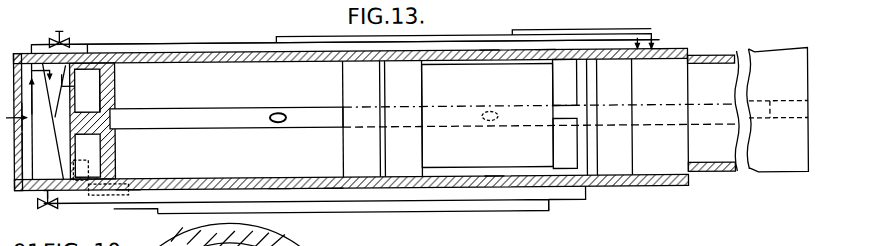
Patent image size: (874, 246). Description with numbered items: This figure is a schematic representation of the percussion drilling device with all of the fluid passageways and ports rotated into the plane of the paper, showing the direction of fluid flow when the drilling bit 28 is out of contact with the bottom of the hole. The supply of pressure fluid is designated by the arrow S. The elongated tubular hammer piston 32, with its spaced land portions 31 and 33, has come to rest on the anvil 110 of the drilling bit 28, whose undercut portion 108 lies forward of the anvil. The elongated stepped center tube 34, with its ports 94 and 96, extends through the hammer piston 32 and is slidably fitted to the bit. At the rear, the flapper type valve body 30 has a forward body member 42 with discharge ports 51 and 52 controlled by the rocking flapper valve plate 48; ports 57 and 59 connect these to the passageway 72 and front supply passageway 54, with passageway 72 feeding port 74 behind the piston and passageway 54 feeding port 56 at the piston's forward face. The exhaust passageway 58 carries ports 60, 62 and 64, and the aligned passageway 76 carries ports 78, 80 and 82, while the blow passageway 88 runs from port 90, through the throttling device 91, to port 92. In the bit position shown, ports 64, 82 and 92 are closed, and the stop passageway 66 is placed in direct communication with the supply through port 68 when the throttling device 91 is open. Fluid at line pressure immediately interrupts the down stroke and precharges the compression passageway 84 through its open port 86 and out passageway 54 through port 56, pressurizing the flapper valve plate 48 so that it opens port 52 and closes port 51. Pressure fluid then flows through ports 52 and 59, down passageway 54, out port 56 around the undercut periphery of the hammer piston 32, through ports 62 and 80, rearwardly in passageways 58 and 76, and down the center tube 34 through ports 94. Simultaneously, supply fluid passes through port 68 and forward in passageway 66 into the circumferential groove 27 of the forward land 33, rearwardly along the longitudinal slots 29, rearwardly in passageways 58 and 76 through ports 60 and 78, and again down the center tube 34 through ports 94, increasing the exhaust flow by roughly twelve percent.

The circumferential groove 27 is at (578, 93).
The drilling bit 28 is at (787, 75).
The longitudinal slots 29 is at (565, 117).
The valve body 30 is at (75, 61).
The land portion 31 is at (357, 83).
The hammer piston 32 is at (425, 85).
The forward land 33 is at (557, 76).
The center tube 34 is at (217, 115).
The forward body member 42 is at (41, 152).
The flapper valve plate 48 is at (72, 161).
The discharge port 51 is at (98, 152).
The discharge port 52 is at (78, 95).
The front supply passageway 54 is at (214, 41).
The port 56 is at (546, 52).
The port 57 is at (77, 202).
The exhaust passageway 58 is at (470, 36).
The port 59 is at (96, 70).
The port 60 is at (277, 52).
The intermediate port 62 is at (490, 52).
The forwardmost port 64 is at (638, 48).
The stop passageway 66 is at (88, 48).
The port 68 is at (34, 195).
The passageway 72 is at (100, 193).
The port 74 is at (127, 185).
The passageway 76 is at (333, 188).
The rearwardmost port 78 is at (278, 190).
The intermediate port 80 is at (497, 164).
The forward port 82 is at (656, 179).
The compression passageway 84 is at (548, 30).
The port 86 is at (546, 181).
The blow passageway 88 is at (163, 41).
The port 90 is at (30, 57).
The throttling device 91 is at (66, 36).
The port 92 is at (654, 50).
The ports 94 is at (276, 112).
The ports 96 is at (484, 112).
The undercut portion 108 is at (729, 80).
The anvil 110 is at (668, 89).
The supply of pressure fluid S is at (34, 115).